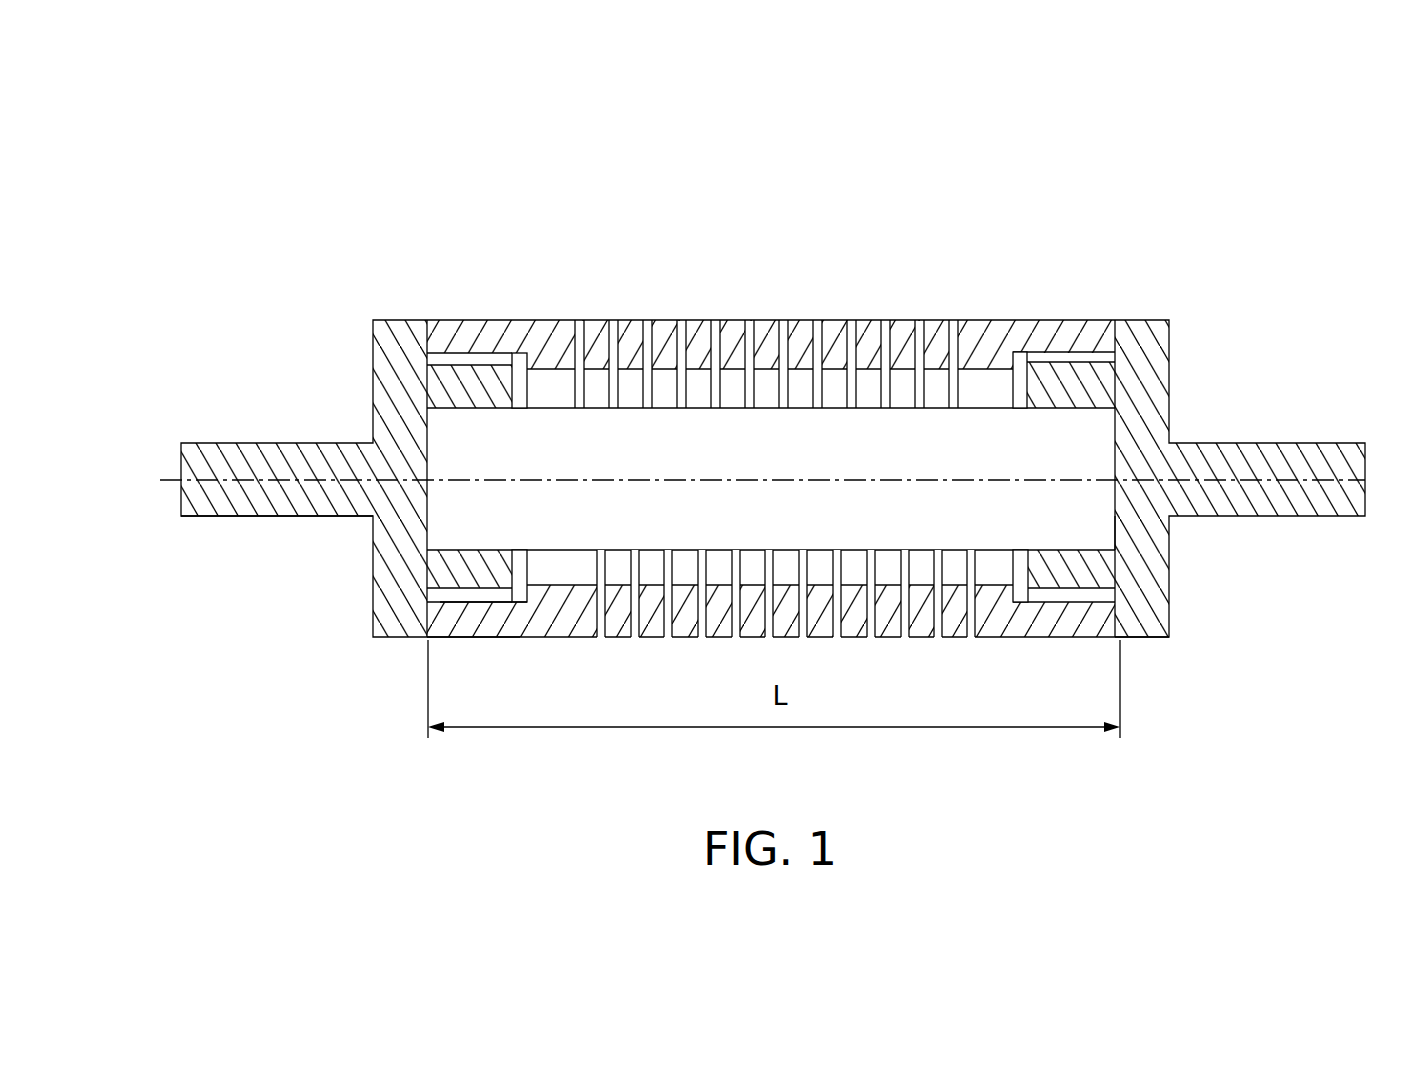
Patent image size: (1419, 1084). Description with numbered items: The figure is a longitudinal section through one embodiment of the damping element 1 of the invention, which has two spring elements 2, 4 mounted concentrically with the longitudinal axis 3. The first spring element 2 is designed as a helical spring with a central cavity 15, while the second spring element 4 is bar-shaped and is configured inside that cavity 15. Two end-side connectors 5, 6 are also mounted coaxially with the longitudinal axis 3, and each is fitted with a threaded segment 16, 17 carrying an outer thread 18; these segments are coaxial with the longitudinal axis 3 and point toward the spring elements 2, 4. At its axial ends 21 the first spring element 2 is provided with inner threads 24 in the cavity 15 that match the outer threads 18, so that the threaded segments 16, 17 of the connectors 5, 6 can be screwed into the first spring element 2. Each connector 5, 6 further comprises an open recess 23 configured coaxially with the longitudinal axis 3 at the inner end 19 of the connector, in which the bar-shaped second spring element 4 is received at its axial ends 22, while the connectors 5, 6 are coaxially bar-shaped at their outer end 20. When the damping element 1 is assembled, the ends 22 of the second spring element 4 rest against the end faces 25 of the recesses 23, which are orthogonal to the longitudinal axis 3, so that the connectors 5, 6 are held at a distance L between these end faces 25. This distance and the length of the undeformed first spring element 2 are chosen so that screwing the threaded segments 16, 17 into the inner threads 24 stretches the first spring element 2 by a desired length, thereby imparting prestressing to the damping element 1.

The damping element 1 is at (938, 279).
The first spring element 2 is at (552, 340).
The longitudinal axis 3 is at (372, 515).
The second spring element 4 is at (878, 430).
The connector 5 is at (370, 325).
The connector 6 is at (1168, 318).
The central cavity 15 is at (568, 390).
The threaded segment 16 is at (488, 572).
The threaded segment 17 is at (1137, 637).
The outer thread 18 is at (452, 617).
The inner end 19 is at (500, 607).
The outer end 20 is at (193, 510).
The axial ends 21 is at (442, 333).
The axial ends 22 is at (445, 460).
The open recess 23 is at (463, 600).
The inner threads 24 is at (492, 323).
The end faces 25 is at (1118, 537).